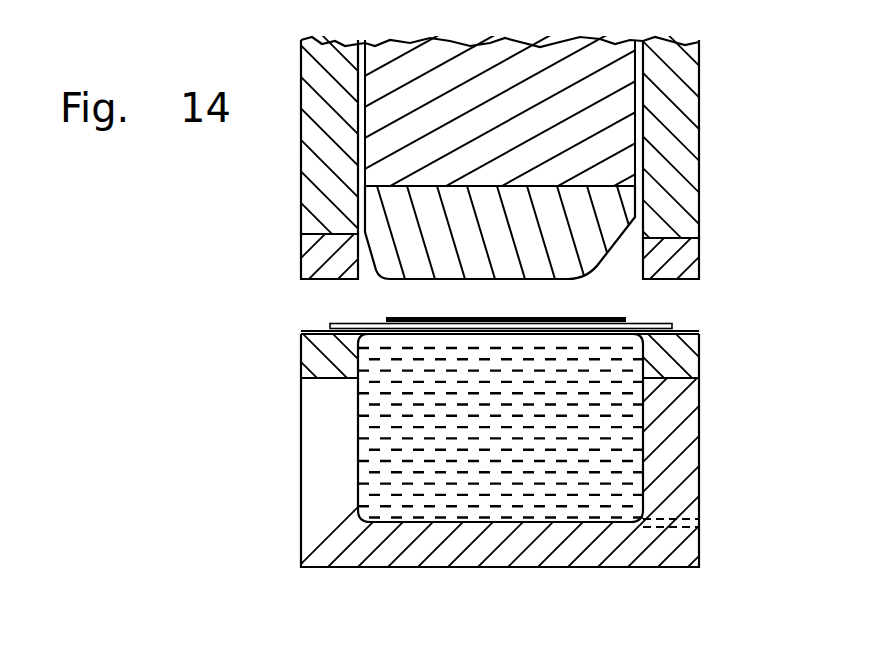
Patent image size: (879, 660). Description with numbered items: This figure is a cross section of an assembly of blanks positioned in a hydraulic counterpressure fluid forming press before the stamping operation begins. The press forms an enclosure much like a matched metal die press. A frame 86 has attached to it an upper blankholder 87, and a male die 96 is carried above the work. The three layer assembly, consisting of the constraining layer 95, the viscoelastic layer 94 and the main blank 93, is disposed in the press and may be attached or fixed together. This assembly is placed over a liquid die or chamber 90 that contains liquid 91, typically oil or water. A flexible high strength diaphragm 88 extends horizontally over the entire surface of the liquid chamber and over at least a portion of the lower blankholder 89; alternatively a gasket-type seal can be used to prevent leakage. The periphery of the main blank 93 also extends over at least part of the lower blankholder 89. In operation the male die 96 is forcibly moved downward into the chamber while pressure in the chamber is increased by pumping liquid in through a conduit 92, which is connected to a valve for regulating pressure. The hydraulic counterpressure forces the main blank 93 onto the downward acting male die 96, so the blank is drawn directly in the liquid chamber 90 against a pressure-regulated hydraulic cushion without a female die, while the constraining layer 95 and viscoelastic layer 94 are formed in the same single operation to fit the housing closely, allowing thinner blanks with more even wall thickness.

The frame 86 is at (298, 219).
The upper blankholder 87 is at (298, 282).
The flexible high strength diaphragm 88 is at (300, 332).
The lower blankholder 89 is at (298, 376).
The liquid die or chamber 90 is at (298, 507).
The liquid 91 is at (405, 511).
The conduit 92 is at (677, 517).
The main blank 93 is at (700, 331).
The viscoelastic layer 94 is at (674, 326).
The constraining layer 95 is at (627, 317).
The male die 96 is at (597, 258).